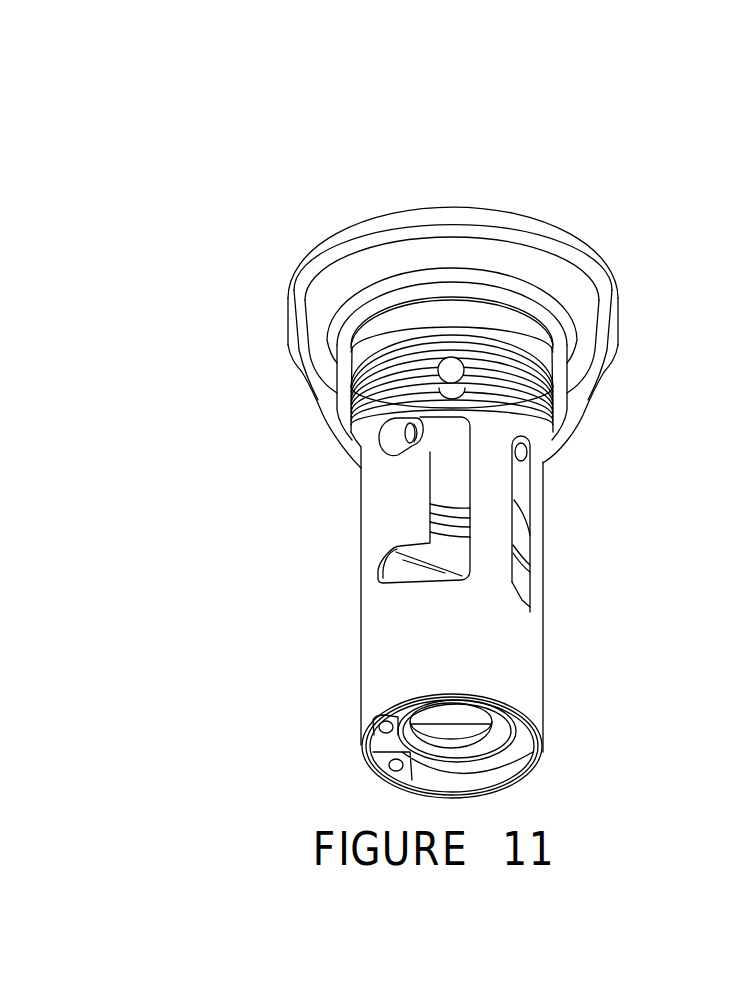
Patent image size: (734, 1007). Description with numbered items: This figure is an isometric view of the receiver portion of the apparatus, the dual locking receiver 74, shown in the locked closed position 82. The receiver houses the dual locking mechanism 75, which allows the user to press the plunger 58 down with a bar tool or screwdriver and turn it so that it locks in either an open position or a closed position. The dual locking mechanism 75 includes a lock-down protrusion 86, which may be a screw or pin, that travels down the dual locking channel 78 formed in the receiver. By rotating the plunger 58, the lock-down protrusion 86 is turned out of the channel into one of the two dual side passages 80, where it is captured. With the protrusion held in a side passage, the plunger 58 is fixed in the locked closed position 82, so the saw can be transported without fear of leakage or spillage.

The dual locking receiver 74 is at (415, 300).
The dual locking mechanism 75 is at (277, 237).
The dual locking channel 78 is at (452, 463).
The dual side passages 80 is at (425, 432).
The locked closed position 82 is at (645, 567).
The lock-down protrusion 86 is at (395, 433).
The plunger 58 is at (517, 507).